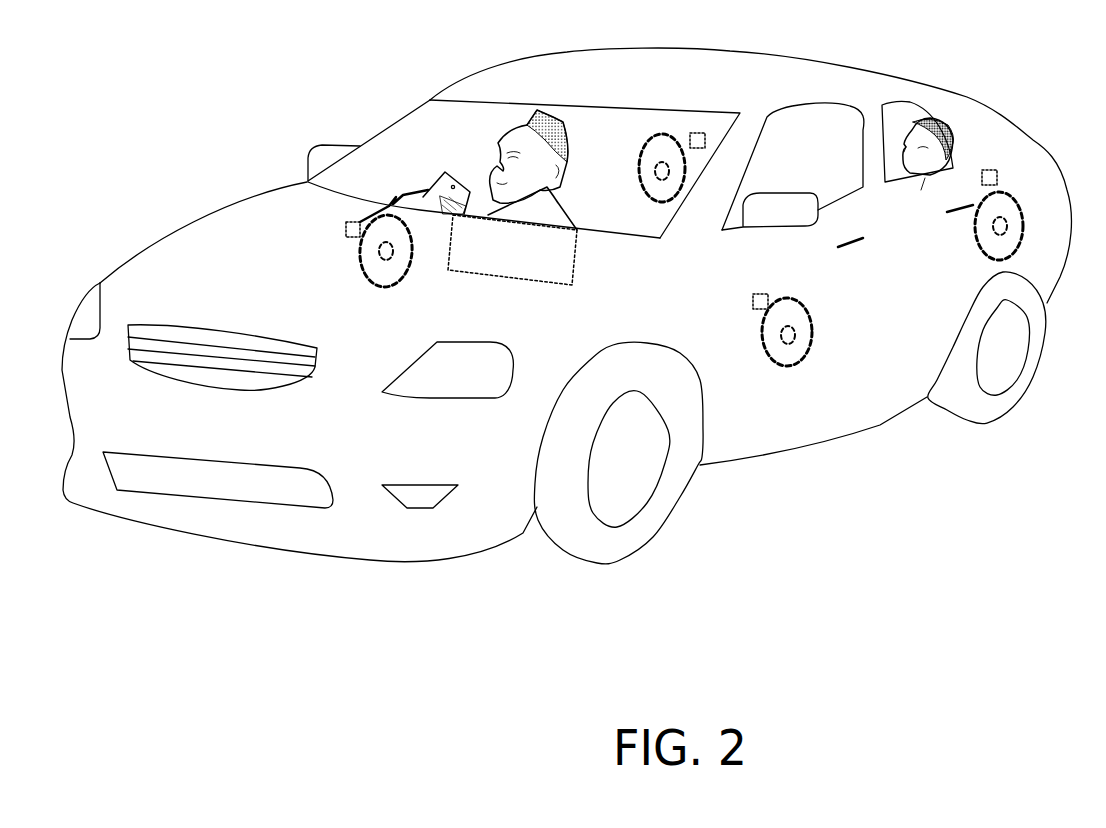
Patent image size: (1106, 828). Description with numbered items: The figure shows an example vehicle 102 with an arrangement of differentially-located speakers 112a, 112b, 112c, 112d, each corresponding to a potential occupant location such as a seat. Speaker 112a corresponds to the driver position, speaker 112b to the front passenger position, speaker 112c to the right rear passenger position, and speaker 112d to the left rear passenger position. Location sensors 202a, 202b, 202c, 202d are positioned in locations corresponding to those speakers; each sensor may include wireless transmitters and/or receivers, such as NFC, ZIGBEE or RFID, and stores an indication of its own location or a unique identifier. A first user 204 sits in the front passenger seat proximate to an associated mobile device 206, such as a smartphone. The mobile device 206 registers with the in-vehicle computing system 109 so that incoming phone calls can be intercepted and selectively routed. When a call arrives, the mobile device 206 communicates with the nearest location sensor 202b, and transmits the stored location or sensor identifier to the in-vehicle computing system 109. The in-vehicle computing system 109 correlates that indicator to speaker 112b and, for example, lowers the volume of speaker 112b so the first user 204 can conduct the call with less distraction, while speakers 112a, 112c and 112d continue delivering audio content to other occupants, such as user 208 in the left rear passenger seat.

The vehicle 102 is at (633, 49).
The in-vehicle computing system 109 is at (530, 261).
The speaker 112a is at (800, 358).
The speaker 112b is at (372, 278).
The speaker 112c is at (657, 142).
The speaker 112d is at (1020, 228).
The location sensor 202a is at (760, 294).
The location sensor 202b is at (351, 222).
The location sensor 202c is at (696, 133).
The location sensor 202d is at (989, 170).
The first user 204 is at (558, 203).
The mobile device 206 is at (447, 172).
The user 208 is at (929, 184).